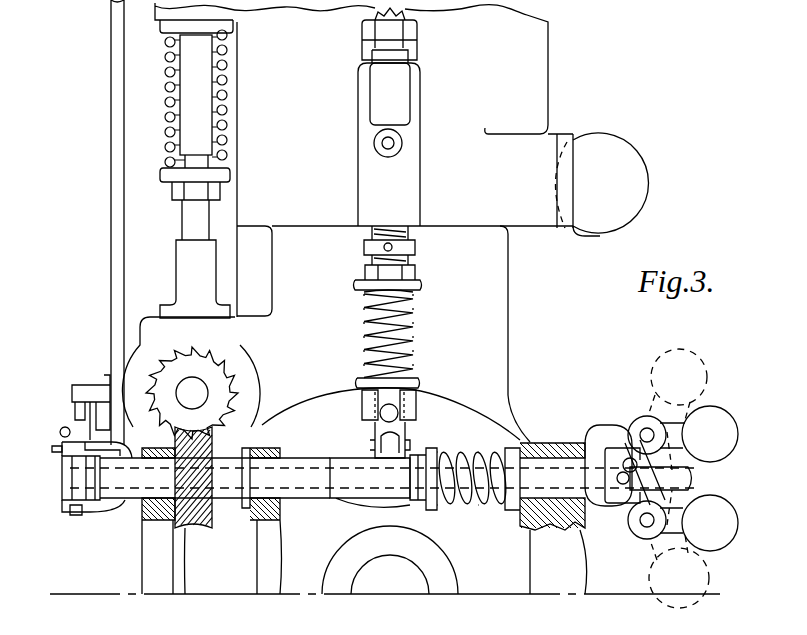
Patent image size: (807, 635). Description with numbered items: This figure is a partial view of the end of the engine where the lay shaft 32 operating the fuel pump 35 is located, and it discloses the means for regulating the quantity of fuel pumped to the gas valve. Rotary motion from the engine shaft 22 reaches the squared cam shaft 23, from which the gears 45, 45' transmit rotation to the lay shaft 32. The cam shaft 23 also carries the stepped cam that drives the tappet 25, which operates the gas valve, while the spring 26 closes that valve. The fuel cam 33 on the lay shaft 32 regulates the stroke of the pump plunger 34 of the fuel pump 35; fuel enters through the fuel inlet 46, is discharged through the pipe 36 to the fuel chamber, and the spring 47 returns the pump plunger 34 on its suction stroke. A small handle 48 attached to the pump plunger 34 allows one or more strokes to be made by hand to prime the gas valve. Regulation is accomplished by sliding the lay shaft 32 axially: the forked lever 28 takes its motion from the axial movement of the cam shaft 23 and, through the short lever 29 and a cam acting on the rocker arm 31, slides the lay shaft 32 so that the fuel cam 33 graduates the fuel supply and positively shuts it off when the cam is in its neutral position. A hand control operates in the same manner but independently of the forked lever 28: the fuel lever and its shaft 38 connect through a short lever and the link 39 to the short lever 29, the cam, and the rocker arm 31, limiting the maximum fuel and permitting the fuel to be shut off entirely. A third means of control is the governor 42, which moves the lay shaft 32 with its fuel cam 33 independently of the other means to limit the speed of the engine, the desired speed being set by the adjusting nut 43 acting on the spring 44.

The engine shaft 22 is at (390, 560).
The squared cam shaft 23 is at (192, 393).
The tappet 25 is at (195, 259).
The spring 26 is at (167, 102).
The forked lever 28 is at (72, 392).
The short lever 29 is at (60, 440).
The rocker arm 31 is at (62, 508).
The lay shaft 32 is at (42, 481).
The fuel cam 33 is at (370, 482).
The pump plunger 34 is at (395, 350).
The fuel pump 35 is at (389, 144).
The pipe 36 is at (400, 14).
The shaft 38 is at (111, 178).
The link 39 is at (52, 450).
The governor 42 is at (718, 450).
The adjusting nut 43 is at (433, 455).
The spring 44 is at (472, 452).
The gear 45 is at (192, 393).
The gear 45' is at (213, 477).
The fuel inlet 46 is at (402, 143).
The spring 47 is at (412, 322).
The small handle 48 is at (380, 417).